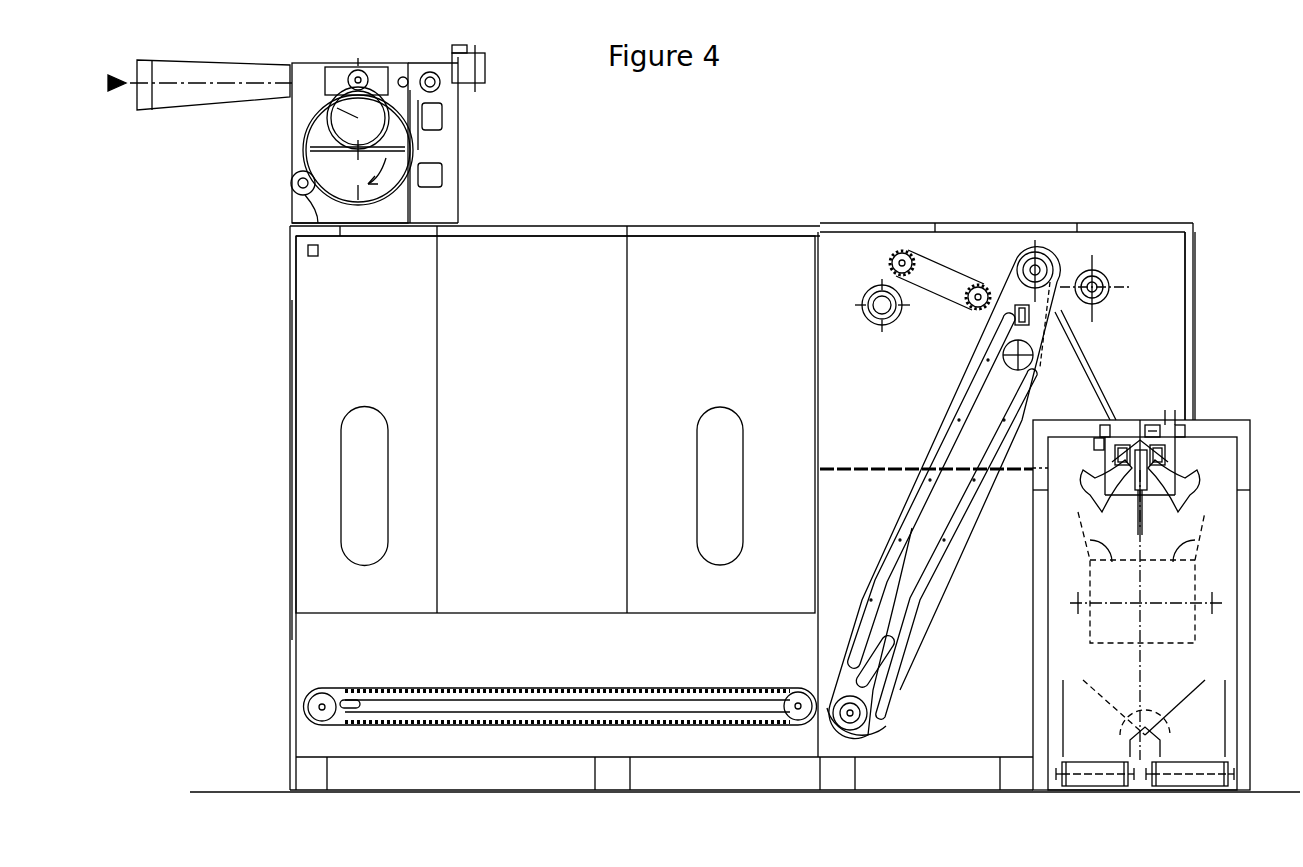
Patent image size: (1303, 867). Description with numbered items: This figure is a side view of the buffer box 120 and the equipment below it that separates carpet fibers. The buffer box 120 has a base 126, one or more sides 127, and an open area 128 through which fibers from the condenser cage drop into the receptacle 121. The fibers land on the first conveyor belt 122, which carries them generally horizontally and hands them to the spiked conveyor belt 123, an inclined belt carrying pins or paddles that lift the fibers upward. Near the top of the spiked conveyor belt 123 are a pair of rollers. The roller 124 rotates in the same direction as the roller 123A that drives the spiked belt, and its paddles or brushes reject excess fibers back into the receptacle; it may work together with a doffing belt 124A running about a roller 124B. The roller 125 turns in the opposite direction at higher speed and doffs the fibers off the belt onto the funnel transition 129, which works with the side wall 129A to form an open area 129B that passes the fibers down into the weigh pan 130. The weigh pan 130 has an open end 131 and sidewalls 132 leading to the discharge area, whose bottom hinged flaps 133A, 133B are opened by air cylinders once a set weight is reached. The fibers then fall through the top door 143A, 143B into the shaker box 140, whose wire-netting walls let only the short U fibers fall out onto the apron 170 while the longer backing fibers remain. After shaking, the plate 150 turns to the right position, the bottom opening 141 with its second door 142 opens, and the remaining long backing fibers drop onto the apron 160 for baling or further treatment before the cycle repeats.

The buffer box 120 is at (650, 226).
The receptacle 121 is at (555, 424).
The first conveyor belt 122 is at (506, 692).
The spiked conveyor belt 123 is at (905, 530).
The conveyor belt roller 123A is at (1037, 258).
The roller 124 is at (965, 308).
The doffing belt 124A is at (985, 293).
The roller 124B is at (888, 258).
The roller 125 is at (1108, 278).
The base 126 is at (672, 760).
The side 127 is at (290, 470).
The open area 128 is at (368, 236).
The funnel transition 129 is at (1087, 365).
The side wall 129A is at (1196, 335).
The open area 129B is at (1165, 420).
The weigh pan 130 is at (1182, 450).
The open end 131 is at (1190, 432).
The sidewall 132 is at (1098, 447).
The bottom hinged flap 133A is at (1092, 492).
The bottom hinged flap 133B is at (1188, 490).
The shaker box 140 is at (1190, 582).
The bottom opening 141 is at (1037, 665).
The second door 142 is at (1185, 655).
The door 143A is at (1088, 556).
The door 143B is at (1200, 535).
The plate 150 is at (1186, 712).
The apron 160 is at (1095, 792).
The apron 170 is at (1183, 790).